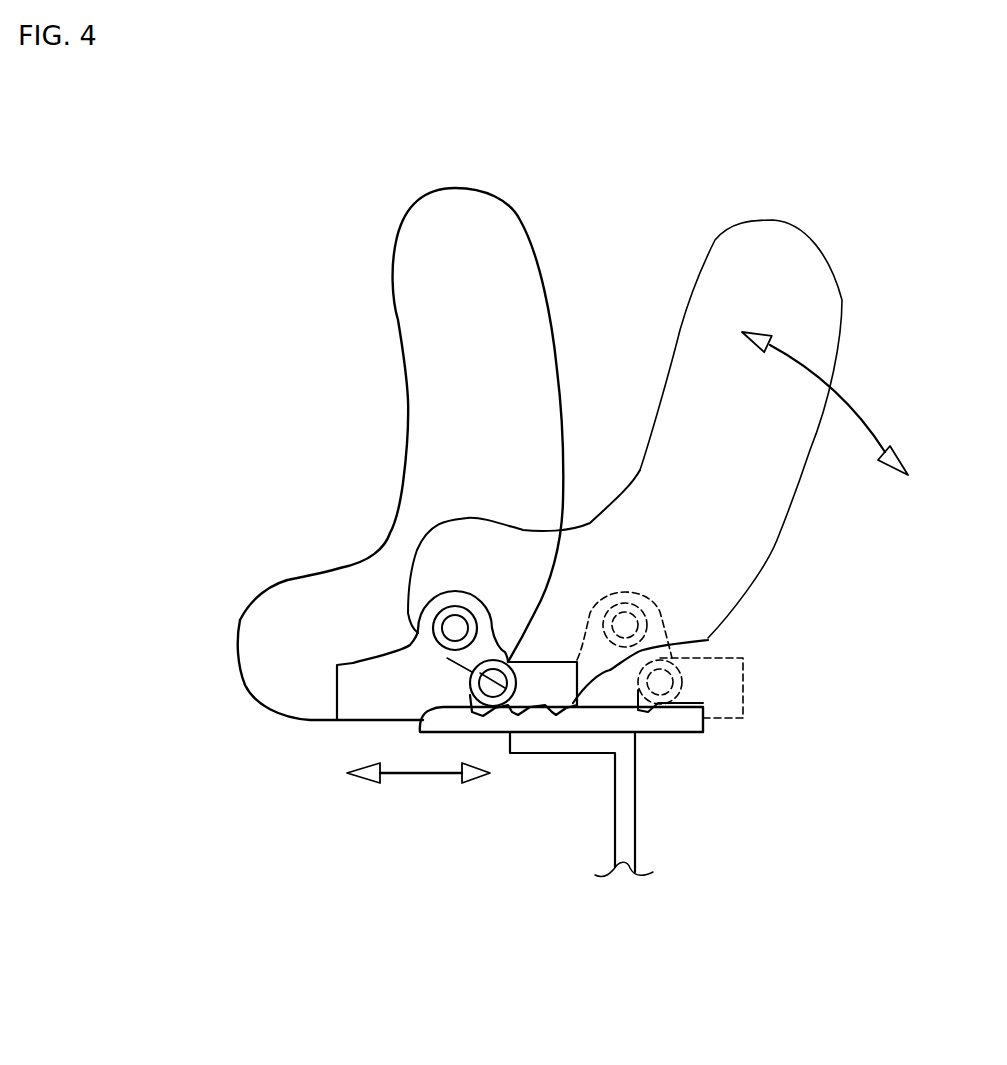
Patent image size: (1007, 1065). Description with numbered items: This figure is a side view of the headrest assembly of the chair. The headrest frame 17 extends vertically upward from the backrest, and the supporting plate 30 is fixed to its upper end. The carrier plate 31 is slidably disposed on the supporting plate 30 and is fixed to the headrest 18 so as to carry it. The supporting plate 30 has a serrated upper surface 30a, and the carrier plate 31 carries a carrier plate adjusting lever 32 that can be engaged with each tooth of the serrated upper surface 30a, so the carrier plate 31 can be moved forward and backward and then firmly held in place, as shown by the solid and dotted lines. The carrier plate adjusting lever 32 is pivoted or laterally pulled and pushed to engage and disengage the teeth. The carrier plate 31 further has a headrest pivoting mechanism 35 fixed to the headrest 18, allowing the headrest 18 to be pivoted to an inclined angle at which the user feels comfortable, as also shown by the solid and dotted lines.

The headrest 18 is at (543, 293).
The carrier plate 31 is at (350, 668).
The headrest pivoting mechanism 35 is at (448, 630).
The carrier plate adjusting lever 32 is at (470, 681).
The serrated upper surface 30a is at (678, 666).
The supporting plate 30 is at (679, 728).
The headrest frame 17 is at (617, 825).